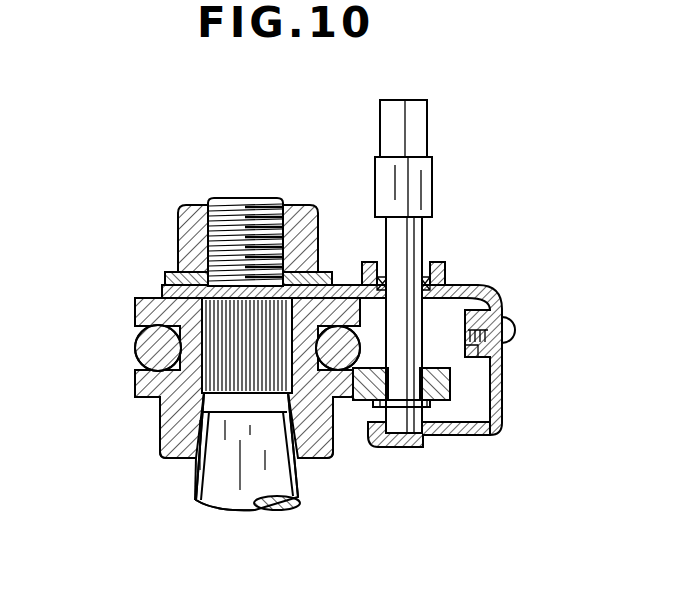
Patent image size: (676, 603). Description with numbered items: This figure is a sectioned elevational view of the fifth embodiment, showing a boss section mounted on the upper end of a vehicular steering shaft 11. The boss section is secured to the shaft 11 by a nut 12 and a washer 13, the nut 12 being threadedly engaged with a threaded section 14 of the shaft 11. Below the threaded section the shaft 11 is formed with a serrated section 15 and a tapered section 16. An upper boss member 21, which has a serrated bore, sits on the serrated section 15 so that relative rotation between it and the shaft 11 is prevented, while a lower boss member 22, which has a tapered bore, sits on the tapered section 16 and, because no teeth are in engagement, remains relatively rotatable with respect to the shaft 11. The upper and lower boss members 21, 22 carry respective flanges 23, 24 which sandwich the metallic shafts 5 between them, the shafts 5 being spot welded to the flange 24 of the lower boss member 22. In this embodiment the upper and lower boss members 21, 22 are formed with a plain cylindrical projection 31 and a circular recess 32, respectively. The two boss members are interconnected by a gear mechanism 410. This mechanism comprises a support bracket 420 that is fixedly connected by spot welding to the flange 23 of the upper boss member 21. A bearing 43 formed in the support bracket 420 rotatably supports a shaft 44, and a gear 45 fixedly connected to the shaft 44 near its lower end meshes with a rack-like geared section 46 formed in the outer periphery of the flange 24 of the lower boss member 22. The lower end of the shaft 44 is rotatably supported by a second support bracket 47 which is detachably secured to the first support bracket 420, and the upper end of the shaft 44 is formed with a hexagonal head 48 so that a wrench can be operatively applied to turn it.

The metallic shafts 5 is at (135, 338).
The vehicular steering shaft 11 is at (210, 493).
The nut 12 is at (192, 210).
The washer 13 is at (173, 272).
The threaded section 14 is at (238, 210).
The serrated section 15 is at (321, 460).
The tapered section 16 is at (243, 513).
The upper boss member 21 is at (137, 355).
The lower boss member 22 is at (168, 433).
The flange 23 is at (135, 310).
The flange 24 is at (135, 398).
The plain cylindrical projection 31 is at (190, 460).
The circular recess 32 is at (197, 463).
The bearing 43 is at (418, 252).
The shaft 44 is at (425, 190).
The gear 45 is at (452, 423).
The rack-like geared section 46 is at (345, 407).
The second support bracket 47 is at (496, 421).
The hexagonal head 48 is at (421, 128).
The gear mechanism 410 is at (508, 385).
The support bracket 420 is at (482, 287).